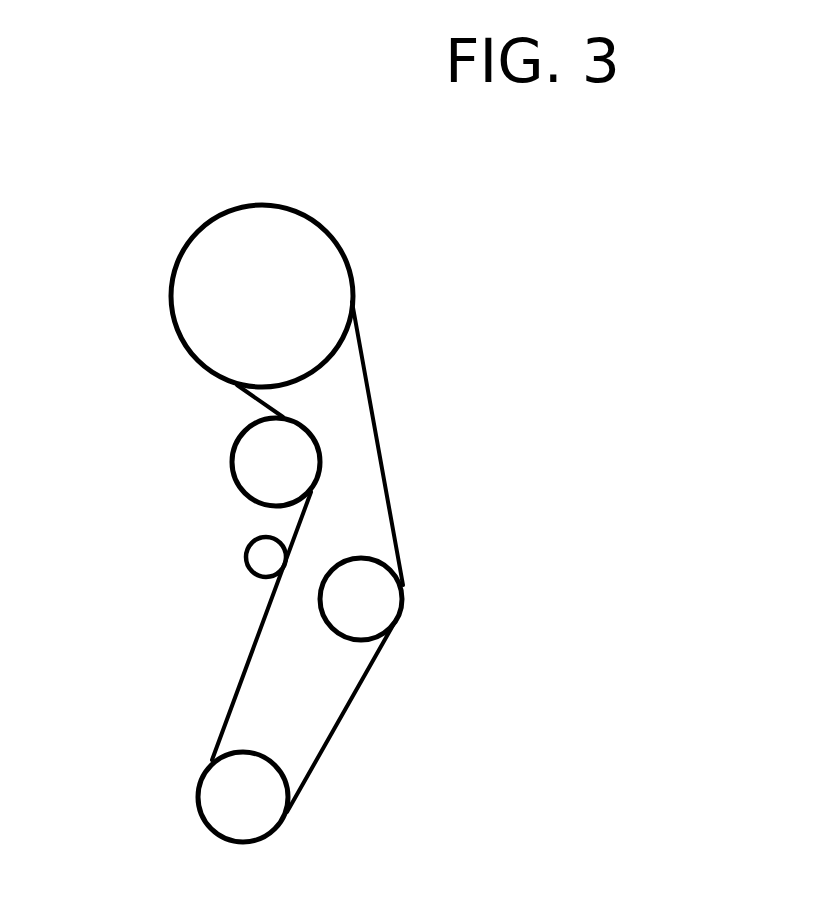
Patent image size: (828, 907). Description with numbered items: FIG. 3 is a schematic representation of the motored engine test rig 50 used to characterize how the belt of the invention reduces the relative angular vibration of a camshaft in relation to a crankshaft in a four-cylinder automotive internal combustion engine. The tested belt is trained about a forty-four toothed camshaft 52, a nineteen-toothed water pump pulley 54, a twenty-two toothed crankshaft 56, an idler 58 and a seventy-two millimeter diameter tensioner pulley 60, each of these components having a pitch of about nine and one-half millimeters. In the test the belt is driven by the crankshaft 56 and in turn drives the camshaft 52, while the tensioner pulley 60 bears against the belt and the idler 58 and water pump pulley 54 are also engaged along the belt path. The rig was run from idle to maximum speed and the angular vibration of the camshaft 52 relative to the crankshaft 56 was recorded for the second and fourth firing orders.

The motored engine test rig 50 is at (538, 477).
The camshaft 52 is at (340, 252).
The water pump pulley 54 is at (403, 600).
The crankshaft 56 is at (268, 835).
The idler 58 is at (257, 580).
The tensioner pulley 60 is at (243, 443).